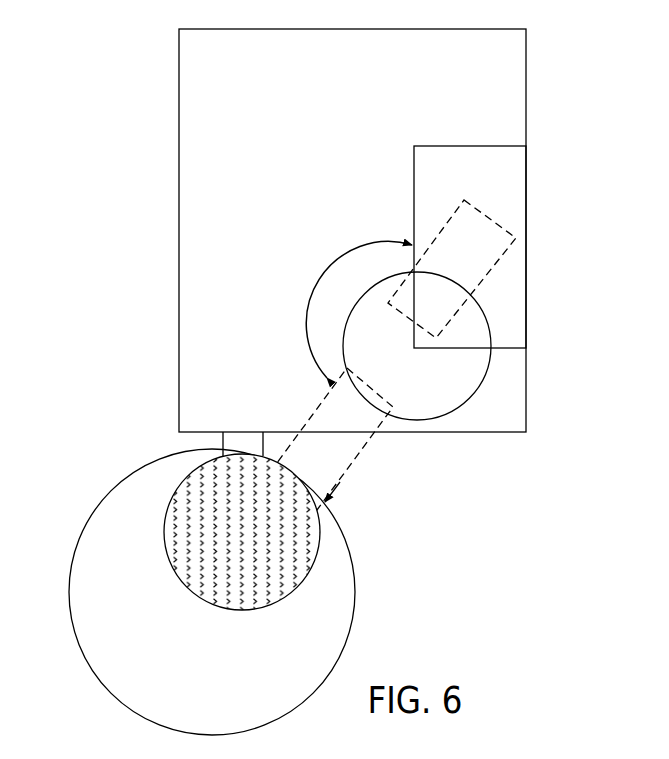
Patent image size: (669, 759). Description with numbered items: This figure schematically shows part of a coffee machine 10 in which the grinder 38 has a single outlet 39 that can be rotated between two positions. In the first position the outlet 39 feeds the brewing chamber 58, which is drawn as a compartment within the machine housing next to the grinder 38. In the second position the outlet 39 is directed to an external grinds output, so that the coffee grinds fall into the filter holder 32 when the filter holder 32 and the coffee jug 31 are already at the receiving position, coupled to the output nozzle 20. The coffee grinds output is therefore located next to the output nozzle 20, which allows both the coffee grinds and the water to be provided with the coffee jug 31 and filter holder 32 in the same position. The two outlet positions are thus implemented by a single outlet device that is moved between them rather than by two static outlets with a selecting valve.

The system 10 is at (137, 93).
The brewing chamber 58 is at (414, 185).
The outlet 39 is at (493, 268).
The grinder 38 is at (473, 395).
The output nozzle 20 is at (222, 440).
The filter holder 32 is at (168, 503).
The coffee jug 31 is at (78, 547).